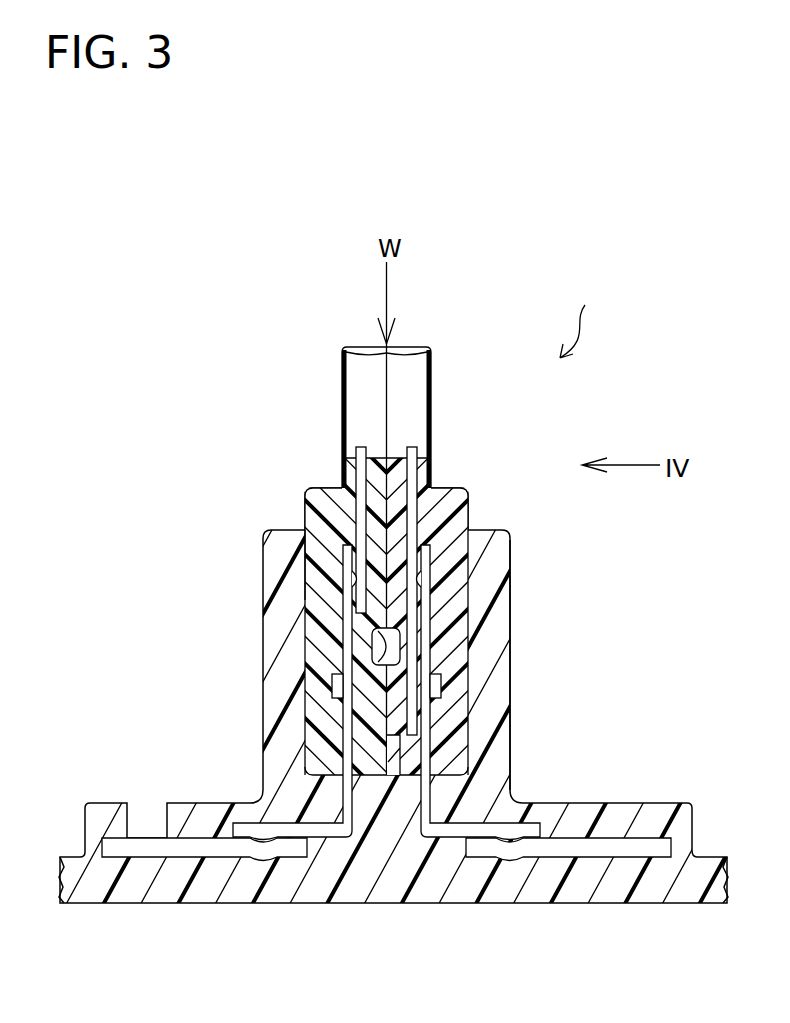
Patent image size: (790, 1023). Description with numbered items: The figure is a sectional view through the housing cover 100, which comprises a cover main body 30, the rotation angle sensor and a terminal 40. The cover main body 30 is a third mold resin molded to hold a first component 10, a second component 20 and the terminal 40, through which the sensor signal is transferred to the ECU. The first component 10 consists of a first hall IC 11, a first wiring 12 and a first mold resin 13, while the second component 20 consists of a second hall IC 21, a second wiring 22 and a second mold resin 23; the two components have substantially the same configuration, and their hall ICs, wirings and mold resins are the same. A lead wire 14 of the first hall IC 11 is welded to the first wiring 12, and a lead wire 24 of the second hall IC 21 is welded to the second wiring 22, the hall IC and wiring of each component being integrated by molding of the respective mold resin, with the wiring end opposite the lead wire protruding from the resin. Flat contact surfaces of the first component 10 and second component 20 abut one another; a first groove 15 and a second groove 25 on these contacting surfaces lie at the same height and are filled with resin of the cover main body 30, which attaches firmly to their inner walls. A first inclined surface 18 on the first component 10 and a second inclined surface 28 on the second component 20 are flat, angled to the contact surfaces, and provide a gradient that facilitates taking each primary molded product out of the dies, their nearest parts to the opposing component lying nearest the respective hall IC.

The first component 10 is at (372, 633).
The first hall IC 11 is at (363, 390).
The first wiring 12 is at (350, 602).
The first mold resin 13 is at (333, 720).
The lead wire 14 is at (360, 510).
The first groove 15 is at (327, 653).
The first inclined surface 18 is at (320, 488).
The second component 20 is at (452, 672).
The second hall IC 21 is at (402, 390).
The second wiring 22 is at (428, 604).
The second mold resin 23 is at (452, 737).
The lead wire 24 is at (413, 522).
The second groove 25 is at (400, 636).
The second inclined surface 28 is at (452, 487).
The cover main body 30 is at (398, 868).
The terminal 40 is at (207, 847).
The housing cover 100 is at (592, 314).